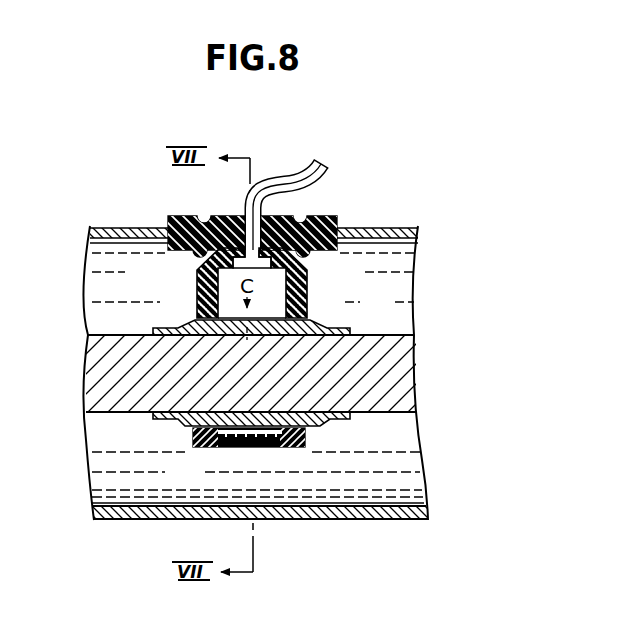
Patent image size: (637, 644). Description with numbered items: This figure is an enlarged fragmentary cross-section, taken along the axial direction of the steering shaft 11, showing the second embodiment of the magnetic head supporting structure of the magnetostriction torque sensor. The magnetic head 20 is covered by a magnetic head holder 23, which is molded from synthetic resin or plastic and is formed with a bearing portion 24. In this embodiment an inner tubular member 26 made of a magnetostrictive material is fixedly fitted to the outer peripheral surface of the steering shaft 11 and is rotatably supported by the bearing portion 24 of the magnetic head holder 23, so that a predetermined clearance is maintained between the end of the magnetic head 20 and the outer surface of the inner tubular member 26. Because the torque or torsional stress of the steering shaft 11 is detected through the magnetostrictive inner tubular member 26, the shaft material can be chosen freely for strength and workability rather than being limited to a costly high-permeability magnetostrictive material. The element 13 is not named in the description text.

The steering shaft 11 is at (384, 386).
The top plate 13 is at (395, 230).
The magnetic head 20 is at (268, 284).
The magnetic head holder 23 is at (195, 280).
The bearing portion 24 is at (308, 316).
The inner tubular member 26 is at (322, 330).